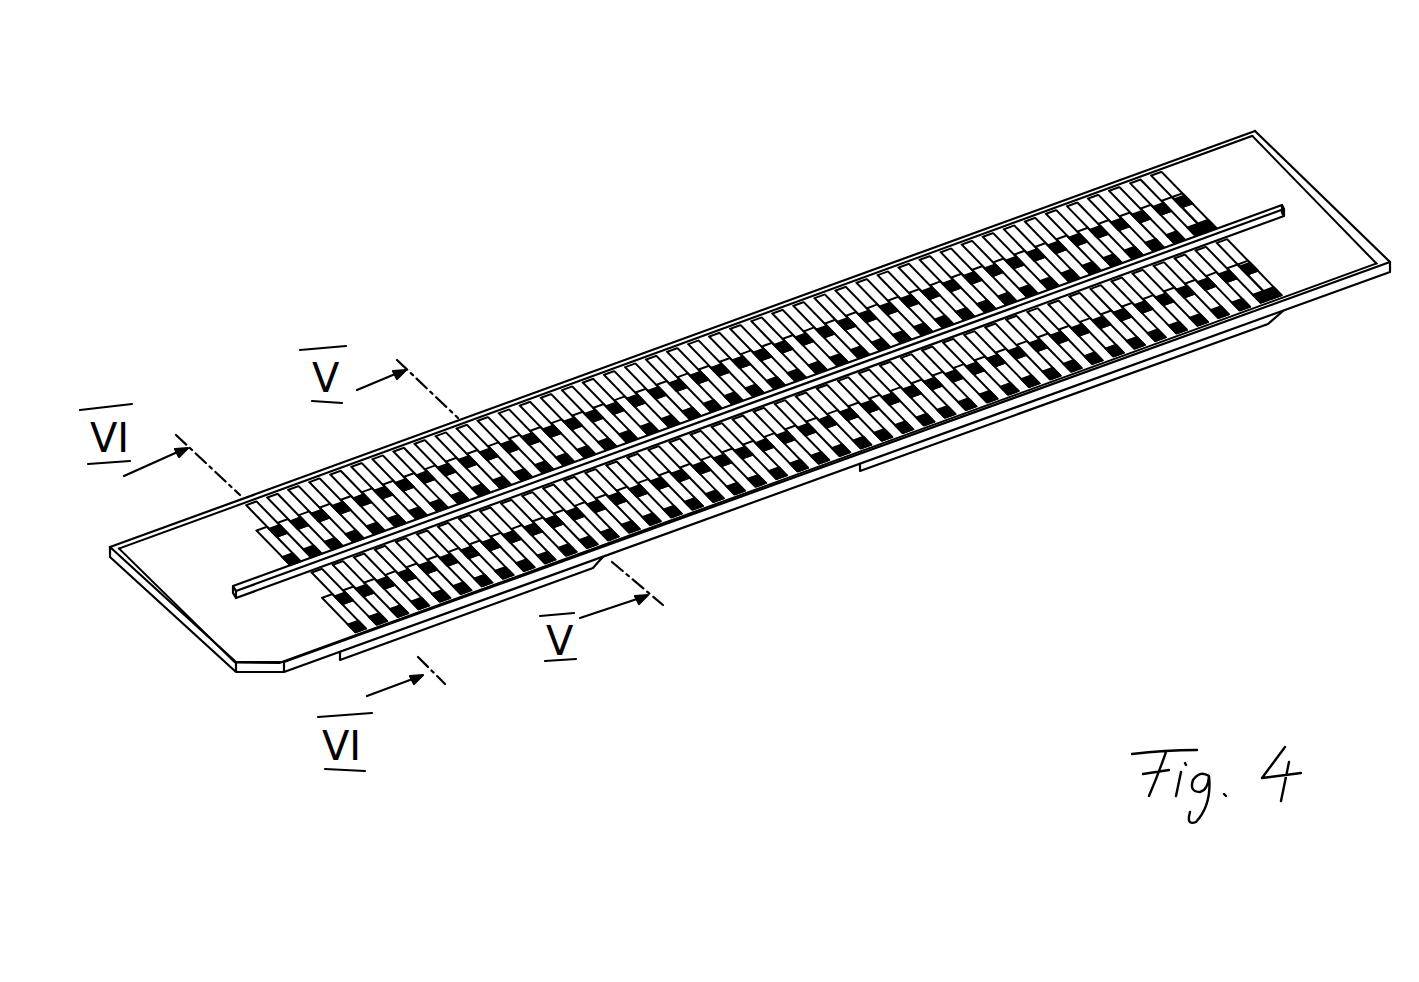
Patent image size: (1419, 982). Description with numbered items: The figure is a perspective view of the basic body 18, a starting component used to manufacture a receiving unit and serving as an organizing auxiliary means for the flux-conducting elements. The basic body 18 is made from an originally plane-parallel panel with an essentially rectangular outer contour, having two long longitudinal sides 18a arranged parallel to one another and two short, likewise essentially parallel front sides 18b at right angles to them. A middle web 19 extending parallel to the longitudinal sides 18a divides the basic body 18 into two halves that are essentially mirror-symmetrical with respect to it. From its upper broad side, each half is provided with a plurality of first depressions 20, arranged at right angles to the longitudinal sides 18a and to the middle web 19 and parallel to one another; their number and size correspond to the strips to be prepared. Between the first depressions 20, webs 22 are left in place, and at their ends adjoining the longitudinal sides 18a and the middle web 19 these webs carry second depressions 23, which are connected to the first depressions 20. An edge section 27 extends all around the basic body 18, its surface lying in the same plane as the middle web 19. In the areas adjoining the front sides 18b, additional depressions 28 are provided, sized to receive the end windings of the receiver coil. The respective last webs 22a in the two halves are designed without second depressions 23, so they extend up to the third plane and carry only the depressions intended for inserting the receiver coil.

The basic body 18 is at (651, 332).
The longitudinal sides 18a is at (778, 300).
The front sides 18b is at (1278, 140).
The middle web 19 is at (1263, 212).
The first depressions 20 is at (870, 472).
The webs 22 is at (979, 254).
The last webs 22a is at (1160, 192).
The second depressions 23 is at (548, 400).
The edge section 27 is at (1048, 208).
The additional depressions 28 is at (1327, 262).